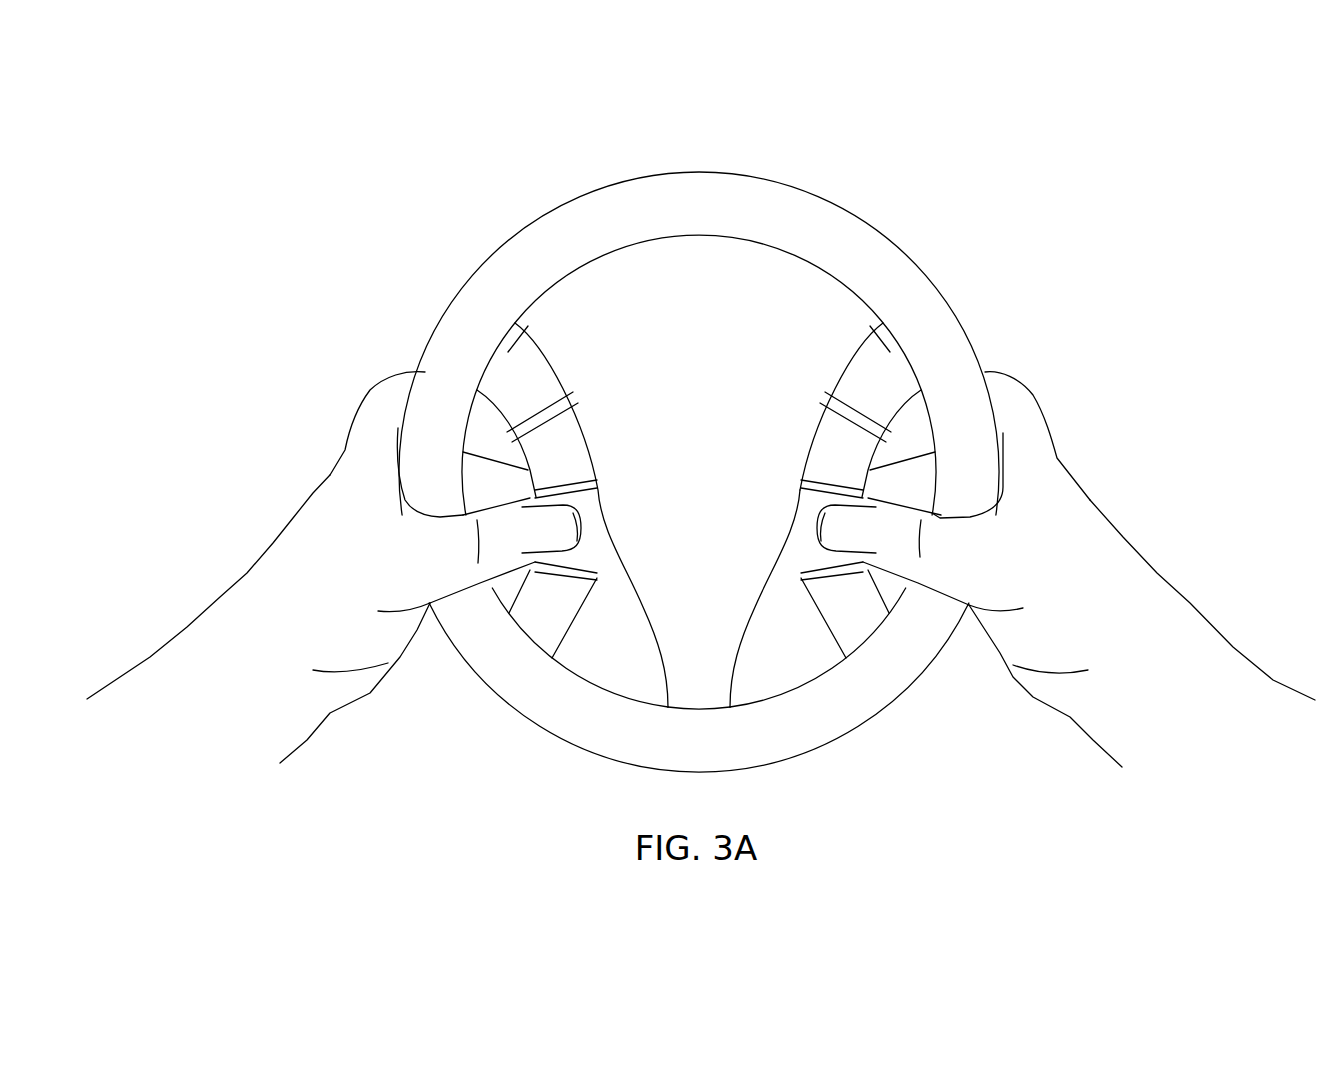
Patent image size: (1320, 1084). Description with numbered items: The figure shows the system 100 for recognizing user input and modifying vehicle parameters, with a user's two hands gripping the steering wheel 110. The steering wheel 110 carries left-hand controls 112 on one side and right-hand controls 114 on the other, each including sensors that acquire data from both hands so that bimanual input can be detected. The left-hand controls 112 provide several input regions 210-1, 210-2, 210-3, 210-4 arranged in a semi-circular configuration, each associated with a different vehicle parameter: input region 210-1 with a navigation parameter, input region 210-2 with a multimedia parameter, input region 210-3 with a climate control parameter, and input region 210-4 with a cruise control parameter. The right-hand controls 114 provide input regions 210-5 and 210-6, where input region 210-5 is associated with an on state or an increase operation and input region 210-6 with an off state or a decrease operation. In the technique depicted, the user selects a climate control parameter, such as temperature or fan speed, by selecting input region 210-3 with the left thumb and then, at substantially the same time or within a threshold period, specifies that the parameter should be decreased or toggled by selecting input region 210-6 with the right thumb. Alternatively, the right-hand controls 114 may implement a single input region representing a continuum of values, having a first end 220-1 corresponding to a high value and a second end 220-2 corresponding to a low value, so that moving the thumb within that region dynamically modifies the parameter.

The system 100 is at (1097, 232).
The steering wheel 110 is at (694, 170).
The left-hand controls 112 is at (537, 658).
The right-hand controls 114 is at (878, 647).
The input region 210-1 is at (527, 337).
The input region 210-2 is at (575, 445).
The input region 210-3 is at (600, 560).
The input region 210-4 is at (530, 637).
The input region 210-5 is at (893, 370).
The input region 210-6 is at (806, 648).
The first end 220-1 is at (899, 314).
The second end 220-2 is at (894, 622).